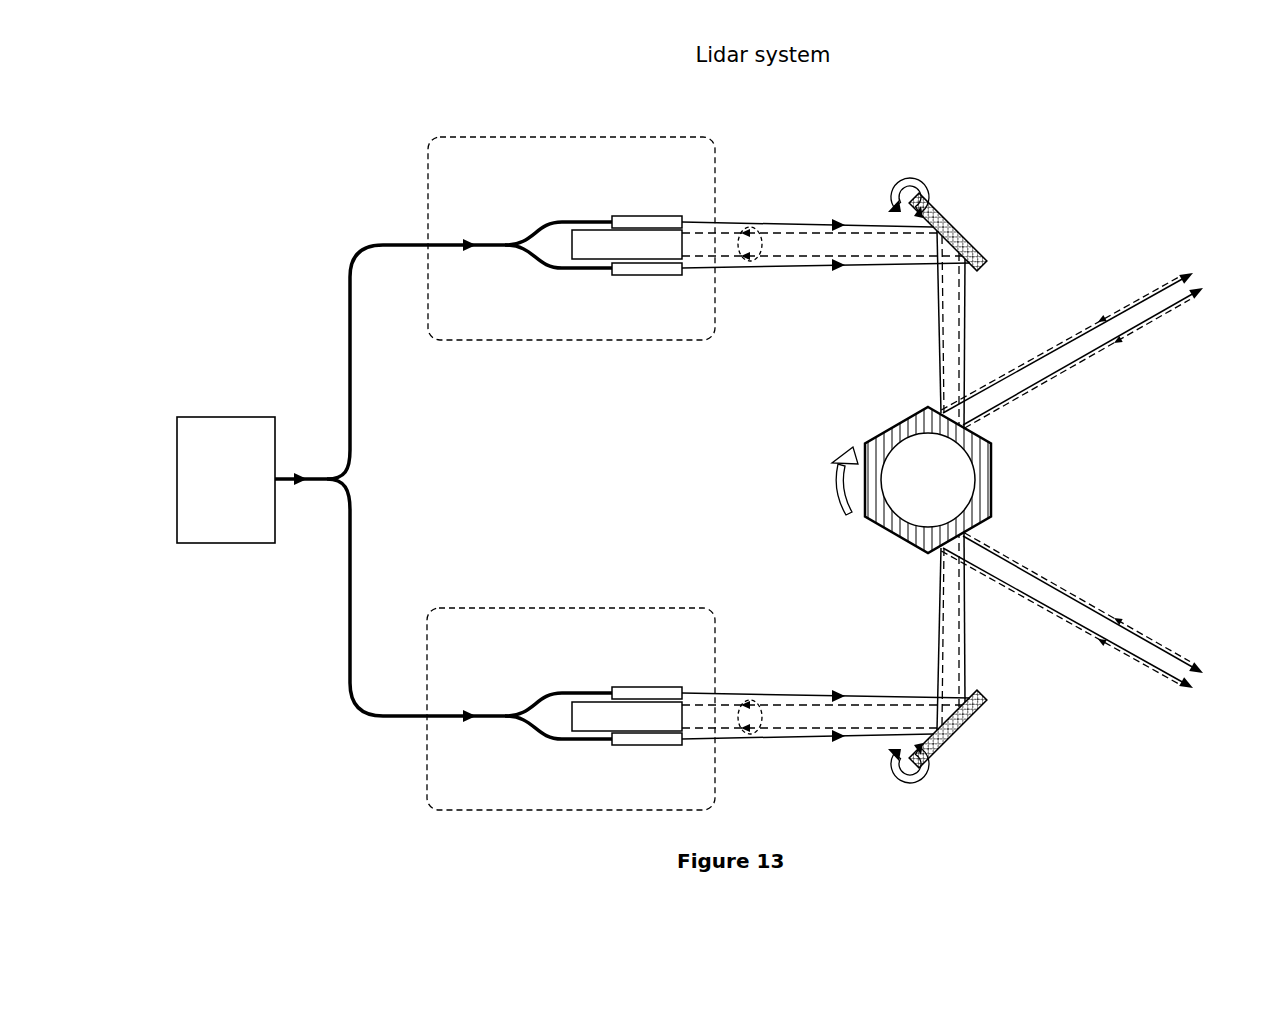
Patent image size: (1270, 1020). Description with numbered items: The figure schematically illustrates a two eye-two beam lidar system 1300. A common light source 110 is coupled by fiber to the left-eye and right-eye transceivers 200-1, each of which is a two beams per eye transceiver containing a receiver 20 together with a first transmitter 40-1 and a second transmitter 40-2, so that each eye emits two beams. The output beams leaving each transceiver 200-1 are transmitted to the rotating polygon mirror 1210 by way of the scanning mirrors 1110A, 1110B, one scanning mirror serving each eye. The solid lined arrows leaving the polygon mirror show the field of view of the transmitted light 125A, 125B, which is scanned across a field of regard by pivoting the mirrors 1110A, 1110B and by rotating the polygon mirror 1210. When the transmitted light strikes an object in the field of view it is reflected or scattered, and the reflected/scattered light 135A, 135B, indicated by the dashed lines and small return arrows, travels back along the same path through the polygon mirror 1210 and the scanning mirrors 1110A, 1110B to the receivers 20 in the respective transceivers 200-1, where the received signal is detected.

The lidar system 1300 is at (790, 87).
The light source 110 is at (208, 515).
The transceiver 200-1 is at (395, 793).
The receiver 20 is at (582, 718).
The first transmitter 40-1 is at (613, 784).
The second transmitter 40-2 is at (670, 695).
The reflected/scattered light 135A is at (758, 226).
The reflected/scattered light 135B is at (758, 697).
The scanning mirror 1110A is at (977, 252).
The scanning mirror 1110B is at (978, 705).
The rotating polygon mirror 1210 is at (897, 432).
The transmitted light 125A is at (1176, 283).
The transmitted light 125B is at (1163, 703).